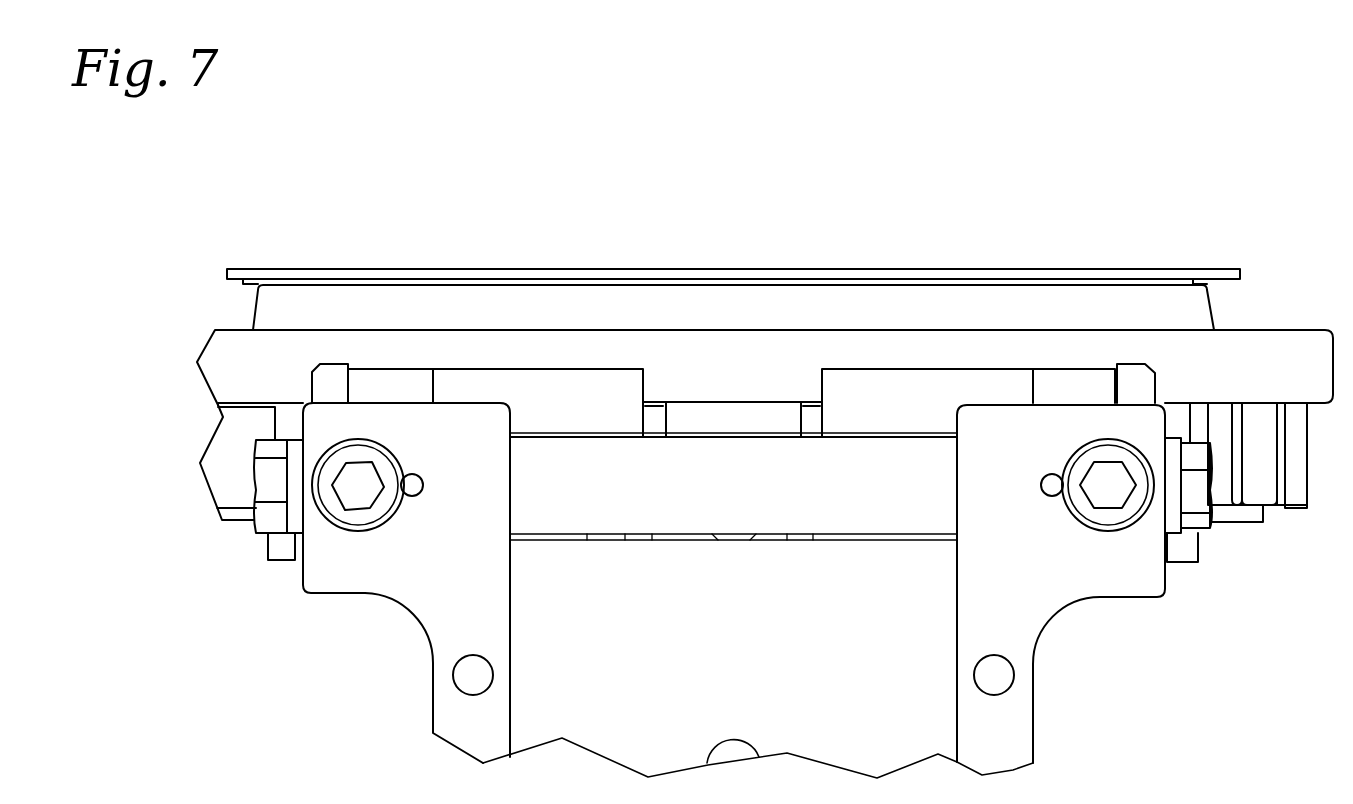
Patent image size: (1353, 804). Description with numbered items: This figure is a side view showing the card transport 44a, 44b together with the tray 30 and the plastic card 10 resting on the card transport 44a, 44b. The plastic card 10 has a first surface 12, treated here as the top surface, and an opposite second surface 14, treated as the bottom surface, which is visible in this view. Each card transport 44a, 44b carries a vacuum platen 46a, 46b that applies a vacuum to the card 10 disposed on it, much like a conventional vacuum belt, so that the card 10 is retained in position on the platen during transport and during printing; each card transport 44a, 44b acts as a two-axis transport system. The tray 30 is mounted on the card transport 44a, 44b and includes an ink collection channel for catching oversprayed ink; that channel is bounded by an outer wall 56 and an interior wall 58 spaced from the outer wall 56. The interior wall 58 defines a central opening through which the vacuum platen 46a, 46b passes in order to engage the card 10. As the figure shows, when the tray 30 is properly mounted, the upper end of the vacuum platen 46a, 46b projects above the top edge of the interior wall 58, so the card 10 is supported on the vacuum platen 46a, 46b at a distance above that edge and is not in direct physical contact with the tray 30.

The plastic card 10 is at (1009, 262).
The first surface 12 is at (1108, 268).
The second surface 14 is at (243, 282).
The tray 30 is at (721, 310).
The outer wall 56 is at (778, 363).
The interior wall 58 is at (367, 303).
The vacuum platen 46a is at (530, 280).
The vacuum platen 46b is at (530, 280).
The card transport 44a is at (425, 587).
The card transport 44b is at (425, 587).